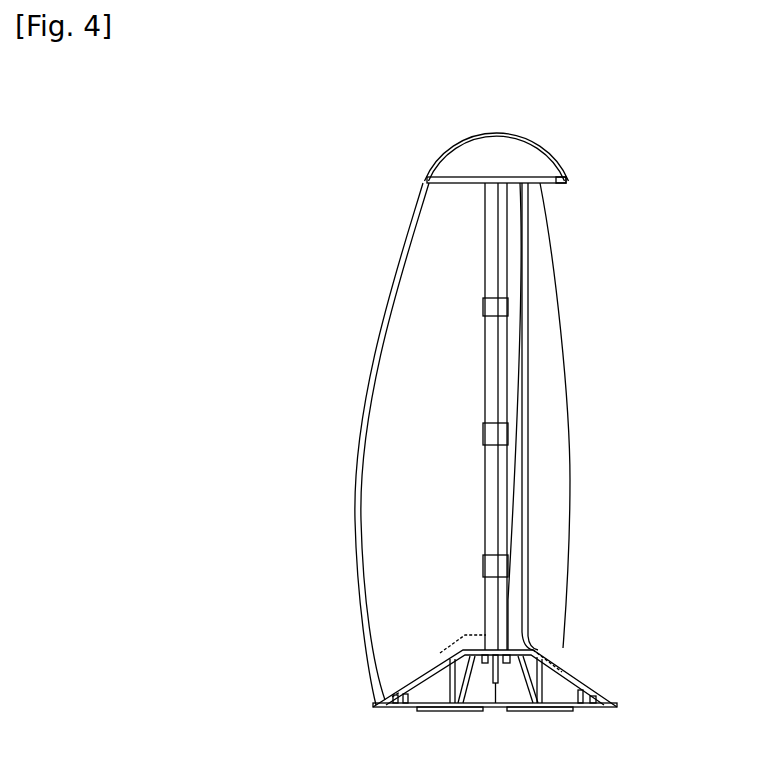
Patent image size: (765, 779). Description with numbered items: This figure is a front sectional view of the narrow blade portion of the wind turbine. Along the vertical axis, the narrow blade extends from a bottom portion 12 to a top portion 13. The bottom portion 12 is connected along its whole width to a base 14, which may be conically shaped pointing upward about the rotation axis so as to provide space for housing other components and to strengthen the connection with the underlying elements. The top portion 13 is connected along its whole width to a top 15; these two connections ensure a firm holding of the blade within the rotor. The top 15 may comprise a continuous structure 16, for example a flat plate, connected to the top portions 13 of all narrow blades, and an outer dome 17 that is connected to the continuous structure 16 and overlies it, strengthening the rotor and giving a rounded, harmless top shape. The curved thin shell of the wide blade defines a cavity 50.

The bottom portion 12 is at (415, 672).
The top portion 13 is at (451, 183).
The base 14 is at (422, 678).
The top 15 is at (438, 158).
The continuous structure 16 is at (551, 177).
The outer dome 17 is at (523, 136).
The cavity 50 is at (396, 433).